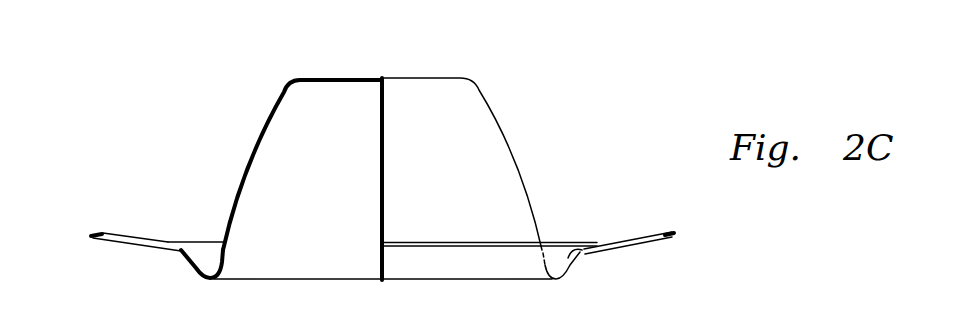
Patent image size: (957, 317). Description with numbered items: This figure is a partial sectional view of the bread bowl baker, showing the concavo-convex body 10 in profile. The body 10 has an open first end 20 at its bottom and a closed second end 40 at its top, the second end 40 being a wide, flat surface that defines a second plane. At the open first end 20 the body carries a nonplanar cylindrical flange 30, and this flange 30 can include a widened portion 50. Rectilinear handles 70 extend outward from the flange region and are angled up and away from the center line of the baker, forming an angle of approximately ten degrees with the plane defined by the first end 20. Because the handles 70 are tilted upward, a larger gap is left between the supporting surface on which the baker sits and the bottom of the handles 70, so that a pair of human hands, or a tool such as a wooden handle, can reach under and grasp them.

The concavo-convex body 10 is at (273, 110).
The first end 20 is at (562, 285).
The nonplanar cylindrical flange 30 is at (563, 285).
The second end 40 is at (400, 77).
The widened portion 50 is at (197, 260).
The rectilinear handles 70 is at (115, 232).